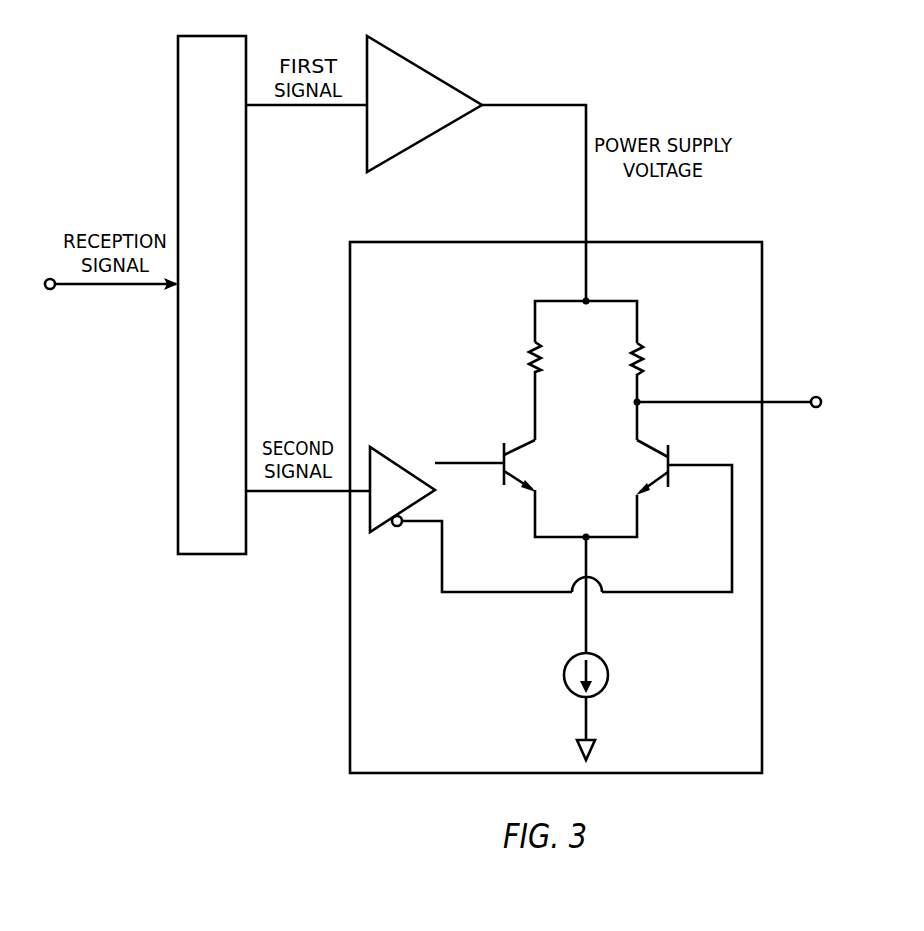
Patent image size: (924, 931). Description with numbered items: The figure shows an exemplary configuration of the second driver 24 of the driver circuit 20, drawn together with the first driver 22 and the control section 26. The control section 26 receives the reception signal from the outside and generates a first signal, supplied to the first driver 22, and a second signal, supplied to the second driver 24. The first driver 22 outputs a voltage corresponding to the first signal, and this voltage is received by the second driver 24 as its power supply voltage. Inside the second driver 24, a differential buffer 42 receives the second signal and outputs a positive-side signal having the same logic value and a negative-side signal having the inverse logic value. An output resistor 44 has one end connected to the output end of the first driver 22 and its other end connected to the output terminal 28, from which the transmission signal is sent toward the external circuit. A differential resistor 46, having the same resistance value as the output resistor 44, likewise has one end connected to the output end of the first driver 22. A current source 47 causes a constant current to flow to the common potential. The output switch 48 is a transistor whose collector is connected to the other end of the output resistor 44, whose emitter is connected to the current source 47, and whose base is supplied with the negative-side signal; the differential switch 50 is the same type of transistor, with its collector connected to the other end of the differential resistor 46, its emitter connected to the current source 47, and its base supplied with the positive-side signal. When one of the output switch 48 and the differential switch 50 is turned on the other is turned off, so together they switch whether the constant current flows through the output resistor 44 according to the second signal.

The driver circuit 20 is at (756, 63).
The first driver 22 is at (447, 82).
The second driver 24 is at (704, 242).
The control section 26 is at (246, 52).
The output terminal 28 is at (821, 407).
The differential buffer 42 is at (380, 447).
The output resistor 44 is at (648, 354).
The differential resistor 46 is at (545, 353).
The current source 47 is at (607, 664).
The output switch 48 is at (652, 449).
The differential switch 50 is at (520, 472).